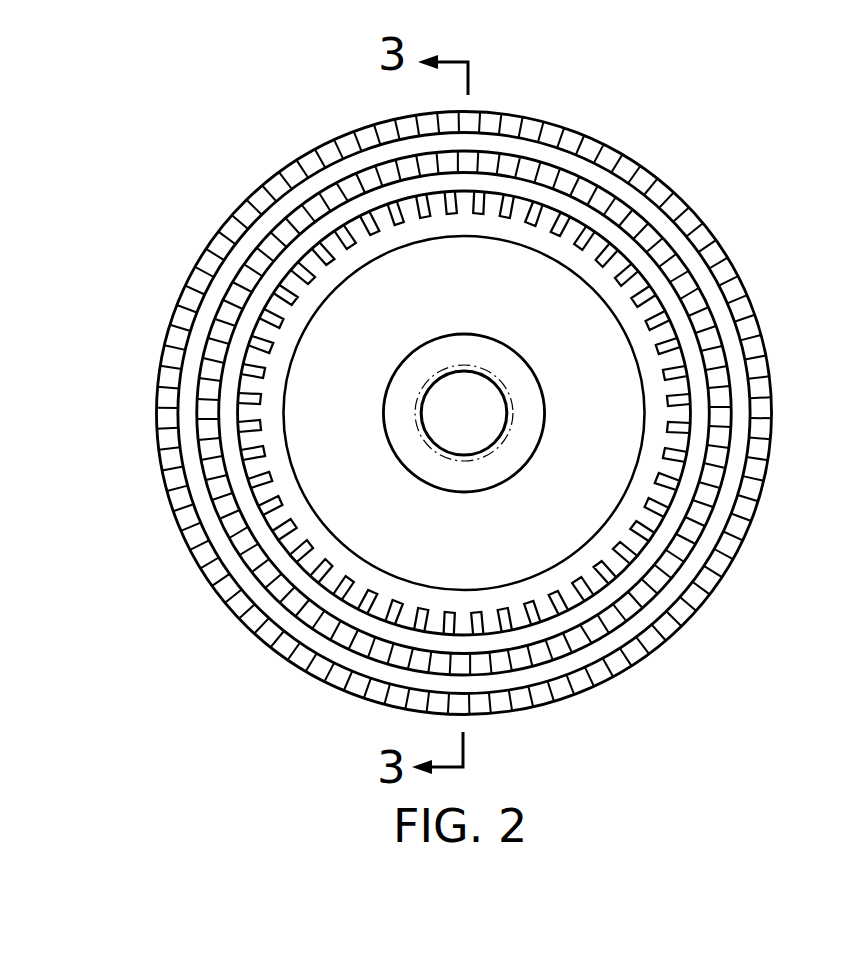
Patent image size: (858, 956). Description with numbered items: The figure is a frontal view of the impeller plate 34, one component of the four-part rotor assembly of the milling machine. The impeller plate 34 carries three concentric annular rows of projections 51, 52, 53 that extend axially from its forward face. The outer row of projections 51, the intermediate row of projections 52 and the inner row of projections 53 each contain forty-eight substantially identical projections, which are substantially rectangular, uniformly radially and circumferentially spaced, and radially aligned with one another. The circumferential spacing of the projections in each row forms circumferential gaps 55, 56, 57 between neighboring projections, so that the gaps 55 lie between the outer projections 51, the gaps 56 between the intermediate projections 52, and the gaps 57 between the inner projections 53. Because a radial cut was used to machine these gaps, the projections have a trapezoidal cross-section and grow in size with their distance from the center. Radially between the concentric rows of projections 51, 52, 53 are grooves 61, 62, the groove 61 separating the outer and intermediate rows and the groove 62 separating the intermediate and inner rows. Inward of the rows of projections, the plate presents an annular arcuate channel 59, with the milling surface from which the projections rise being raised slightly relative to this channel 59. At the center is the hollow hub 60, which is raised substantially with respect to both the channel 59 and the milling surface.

The impeller plate 34 is at (692, 160).
The projections of the outer annular row 51 is at (722, 247).
The projections of the intermediate annular row 52 is at (713, 330).
The projections of the inner annular row 53 is at (640, 300).
The circumferential gaps of the outer row 55 is at (760, 377).
The circumferential gaps of the intermediate row 56 is at (717, 450).
The circumferential gaps of the inner row 57 is at (677, 413).
The annular arcuate channel 59 is at (538, 543).
The hollow hub 60 is at (482, 468).
The groove 61 is at (685, 573).
The groove 62 is at (612, 590).